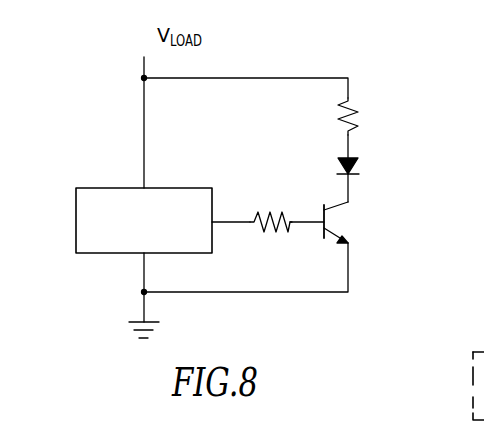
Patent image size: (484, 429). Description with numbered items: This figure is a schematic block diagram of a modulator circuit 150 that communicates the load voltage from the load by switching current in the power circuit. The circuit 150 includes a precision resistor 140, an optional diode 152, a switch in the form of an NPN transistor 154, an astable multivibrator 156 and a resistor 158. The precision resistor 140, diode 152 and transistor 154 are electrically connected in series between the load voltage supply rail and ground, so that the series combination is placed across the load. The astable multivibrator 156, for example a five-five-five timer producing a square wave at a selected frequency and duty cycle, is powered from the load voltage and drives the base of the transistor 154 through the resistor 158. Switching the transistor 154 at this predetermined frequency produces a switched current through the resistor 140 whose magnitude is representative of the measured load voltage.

The precision resistor 140 is at (356, 101).
The circuit 150 is at (273, 331).
The diode 152 is at (353, 167).
The NPN transistor 154 is at (338, 206).
The astable multivibrator 156 is at (110, 187).
The resistor 158 is at (258, 211).